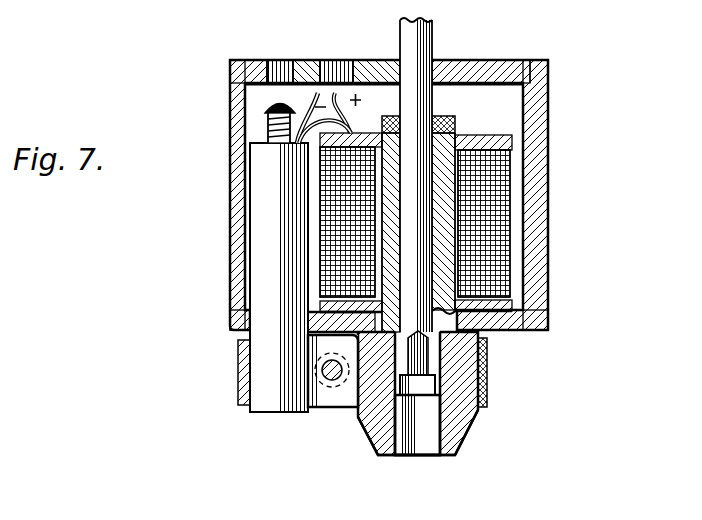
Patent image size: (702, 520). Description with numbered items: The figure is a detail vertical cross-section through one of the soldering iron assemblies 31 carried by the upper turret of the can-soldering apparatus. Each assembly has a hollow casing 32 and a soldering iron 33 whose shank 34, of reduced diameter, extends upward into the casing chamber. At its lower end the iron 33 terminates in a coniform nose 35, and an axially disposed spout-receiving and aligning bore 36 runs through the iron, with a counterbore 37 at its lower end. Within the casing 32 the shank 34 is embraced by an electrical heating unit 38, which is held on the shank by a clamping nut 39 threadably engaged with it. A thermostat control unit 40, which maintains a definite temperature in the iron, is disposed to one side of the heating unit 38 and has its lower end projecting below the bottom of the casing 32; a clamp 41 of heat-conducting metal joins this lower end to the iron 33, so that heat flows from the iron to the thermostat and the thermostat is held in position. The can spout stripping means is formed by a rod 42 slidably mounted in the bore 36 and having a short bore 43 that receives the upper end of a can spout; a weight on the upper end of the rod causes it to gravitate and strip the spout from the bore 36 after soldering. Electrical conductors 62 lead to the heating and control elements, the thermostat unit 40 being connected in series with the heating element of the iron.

The soldering iron assembly 31 is at (410, 232).
The hollow casing 32 is at (549, 140).
The soldering iron 33 is at (465, 395).
The shank 34 is at (447, 240).
The coniform nose 35 is at (467, 437).
The spout-receiving and aligning bore 36 is at (422, 388).
The counterbore 37 is at (410, 440).
The electrical heating unit 38 is at (328, 268).
The clamping nut 39 is at (455, 120).
The thermostat control unit 40 is at (265, 334).
The clamp 41 is at (338, 397).
The rod 42 is at (433, 33).
The short bore 43 is at (420, 358).
The electrical conductors 62 is at (318, 93).